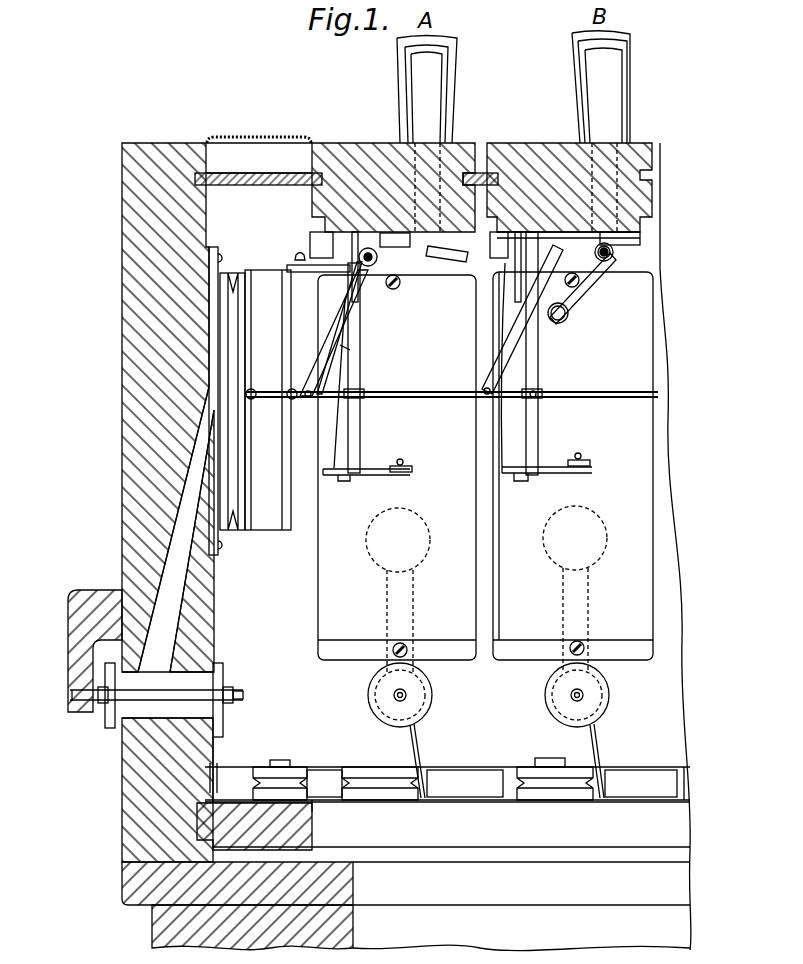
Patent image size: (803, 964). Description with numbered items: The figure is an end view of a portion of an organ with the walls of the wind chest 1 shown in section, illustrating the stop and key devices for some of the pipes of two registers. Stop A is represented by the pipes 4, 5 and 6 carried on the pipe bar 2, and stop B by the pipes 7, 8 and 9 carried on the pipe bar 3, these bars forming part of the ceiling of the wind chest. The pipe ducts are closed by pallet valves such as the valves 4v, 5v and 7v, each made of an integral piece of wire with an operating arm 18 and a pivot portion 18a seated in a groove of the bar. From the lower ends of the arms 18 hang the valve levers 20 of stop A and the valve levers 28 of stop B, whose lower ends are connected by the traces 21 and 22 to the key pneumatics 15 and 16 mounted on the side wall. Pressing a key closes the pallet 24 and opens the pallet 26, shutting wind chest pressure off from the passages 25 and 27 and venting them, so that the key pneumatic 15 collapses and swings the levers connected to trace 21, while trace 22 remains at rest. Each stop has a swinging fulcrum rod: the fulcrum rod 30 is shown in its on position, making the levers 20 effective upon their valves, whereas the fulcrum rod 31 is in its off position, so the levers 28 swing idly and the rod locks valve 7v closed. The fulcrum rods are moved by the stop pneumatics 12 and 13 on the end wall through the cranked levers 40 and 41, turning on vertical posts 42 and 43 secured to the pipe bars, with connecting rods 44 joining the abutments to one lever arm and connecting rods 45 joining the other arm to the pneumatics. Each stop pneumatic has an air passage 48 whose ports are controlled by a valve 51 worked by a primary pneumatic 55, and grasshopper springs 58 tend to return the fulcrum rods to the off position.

The wind chest 1 is at (238, 576).
The pipe bar 2 is at (343, 152).
The pipe bar 3 is at (530, 152).
The pipe 4 is at (433, 86).
The pipe 5 is at (446, 72).
The pipe 6 is at (458, 44).
The pipe 7 is at (612, 86).
The pipe 8 is at (624, 64).
The pipe 9 is at (632, 38).
The stop pneumatic 12 is at (318, 610).
The stop pneumatic 13 is at (522, 632).
The key pneumatic 15 is at (248, 270).
The key pneumatic 16 is at (268, 528).
The operating arm 18 is at (352, 252).
The pivot portion 18a is at (510, 122).
The valve lever 20 is at (356, 357).
The trace 21 is at (420, 400).
The trace 22 is at (437, 400).
The pallet 24 is at (226, 680).
The passage 25 is at (215, 706).
The pallet 26 is at (106, 726).
The passage 27 is at (192, 504).
The valve lever 28 is at (530, 357).
The fulcrum rod 30 is at (365, 272).
The fulcrum rod 31 is at (614, 257).
The cranked lever 40 is at (338, 420).
The cranked lever 41 is at (510, 430).
The vertical post 42 is at (348, 455).
The vertical post 43 is at (522, 452).
The connecting rod 44 is at (287, 268).
The connecting rod 45 is at (404, 466).
The air passage 48 is at (400, 602).
The valve 51 is at (430, 706).
The primary pneumatic 55 is at (362, 762).
The spring 58 is at (565, 320).
The valve 4v is at (400, 290).
The valve 5v is at (450, 262).
The valve 7v is at (636, 236).